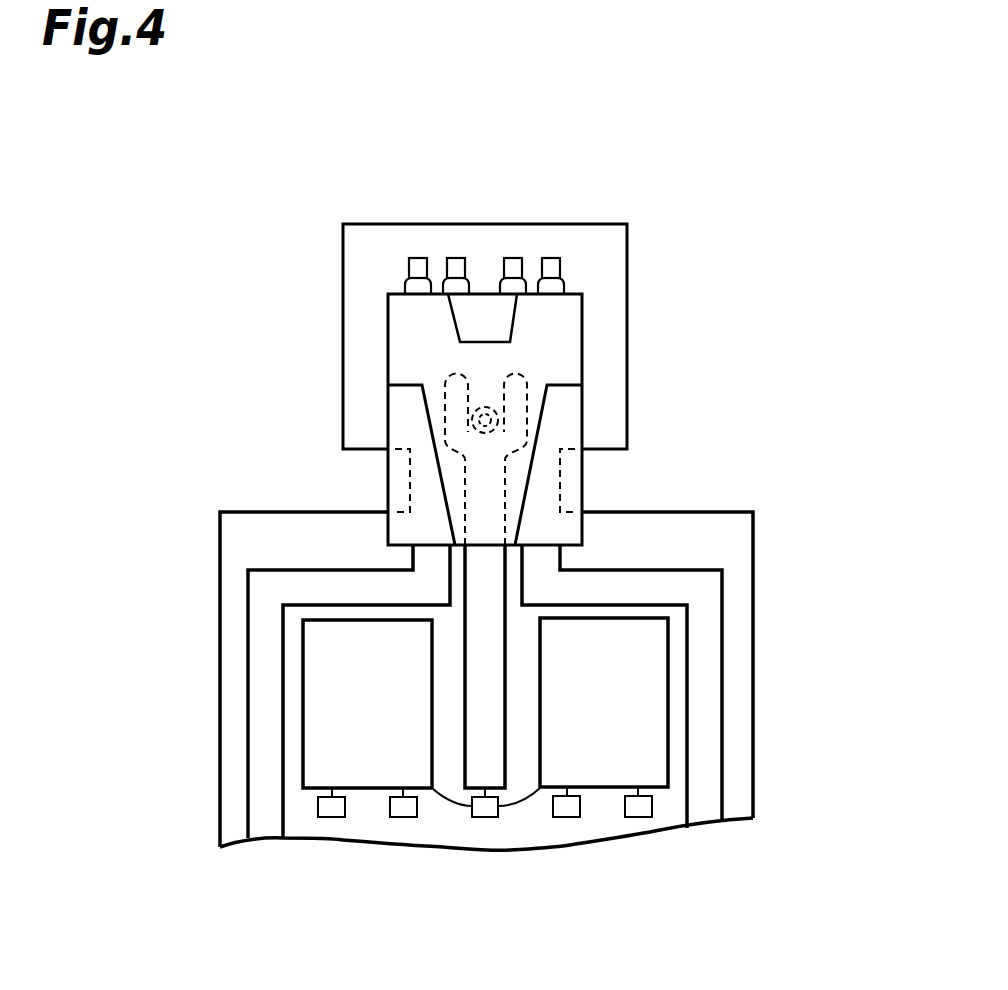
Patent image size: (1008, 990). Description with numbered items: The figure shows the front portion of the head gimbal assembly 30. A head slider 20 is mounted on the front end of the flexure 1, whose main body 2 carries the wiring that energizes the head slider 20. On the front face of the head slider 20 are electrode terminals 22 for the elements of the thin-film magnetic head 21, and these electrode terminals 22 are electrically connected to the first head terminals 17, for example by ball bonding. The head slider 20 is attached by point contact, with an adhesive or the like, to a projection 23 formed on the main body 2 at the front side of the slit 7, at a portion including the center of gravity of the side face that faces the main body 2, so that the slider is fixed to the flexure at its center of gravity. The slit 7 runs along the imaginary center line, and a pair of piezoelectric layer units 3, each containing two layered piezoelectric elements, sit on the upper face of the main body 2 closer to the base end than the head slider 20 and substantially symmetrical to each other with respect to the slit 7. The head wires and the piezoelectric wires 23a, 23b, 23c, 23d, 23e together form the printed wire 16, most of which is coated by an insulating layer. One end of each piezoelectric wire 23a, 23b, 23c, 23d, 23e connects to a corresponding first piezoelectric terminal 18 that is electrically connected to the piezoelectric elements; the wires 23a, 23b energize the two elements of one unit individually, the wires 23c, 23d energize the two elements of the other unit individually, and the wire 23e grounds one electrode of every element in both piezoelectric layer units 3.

The flexure 1 is at (522, 703).
The main body 2 is at (769, 612).
The piezoelectric layer units 3 is at (333, 732).
The slit 7 is at (503, 735).
The printed wire 16 is at (698, 592).
The first head terminals 17 is at (551, 270).
The first piezoelectric terminals 18 is at (397, 818).
The head slider 20 is at (594, 343).
The thin-film magnetic head 21 is at (486, 323).
The electrode terminals 22 is at (432, 294).
The projection 23 is at (498, 420).
The piezoelectric wire 23a is at (640, 818).
The piezoelectric wire 23b is at (570, 818).
The piezoelectric wire 23c is at (397, 818).
The piezoelectric wire 23d is at (323, 820).
The piezoelectric wire 23e is at (470, 818).
The head gimbal assembly 30 is at (233, 213).